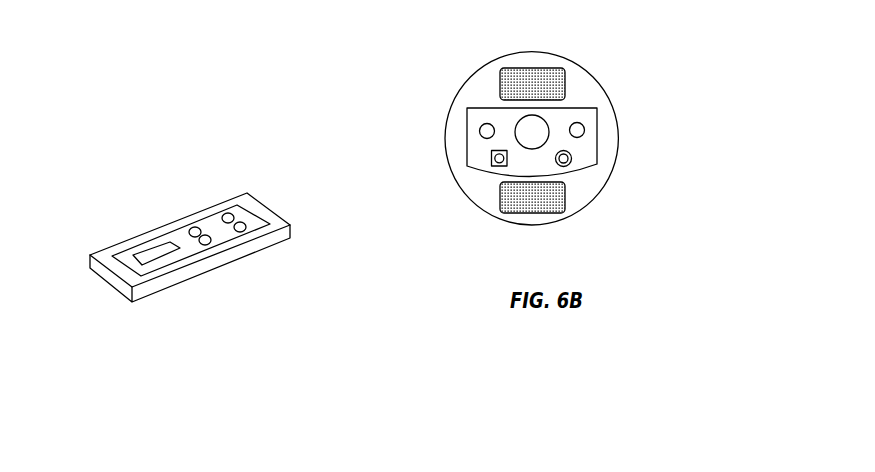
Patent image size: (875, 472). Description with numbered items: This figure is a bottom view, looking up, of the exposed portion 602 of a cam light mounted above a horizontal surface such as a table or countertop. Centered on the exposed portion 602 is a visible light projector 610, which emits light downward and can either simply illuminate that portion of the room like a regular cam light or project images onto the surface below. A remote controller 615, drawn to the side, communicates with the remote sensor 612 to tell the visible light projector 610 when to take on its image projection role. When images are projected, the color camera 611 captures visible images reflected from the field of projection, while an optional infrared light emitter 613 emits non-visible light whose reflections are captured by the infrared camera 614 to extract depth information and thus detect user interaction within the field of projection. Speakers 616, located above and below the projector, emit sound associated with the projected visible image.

The exposed portion 602 is at (463, 88).
The visible light projector 610 is at (540, 124).
The color camera 611 is at (480, 130).
The remote sensor 612 is at (492, 166).
The infrared light emitter 613 is at (585, 130).
The infrared camera 614 is at (572, 158).
The remote controller 615 is at (247, 252).
The speakers 616 is at (565, 78).